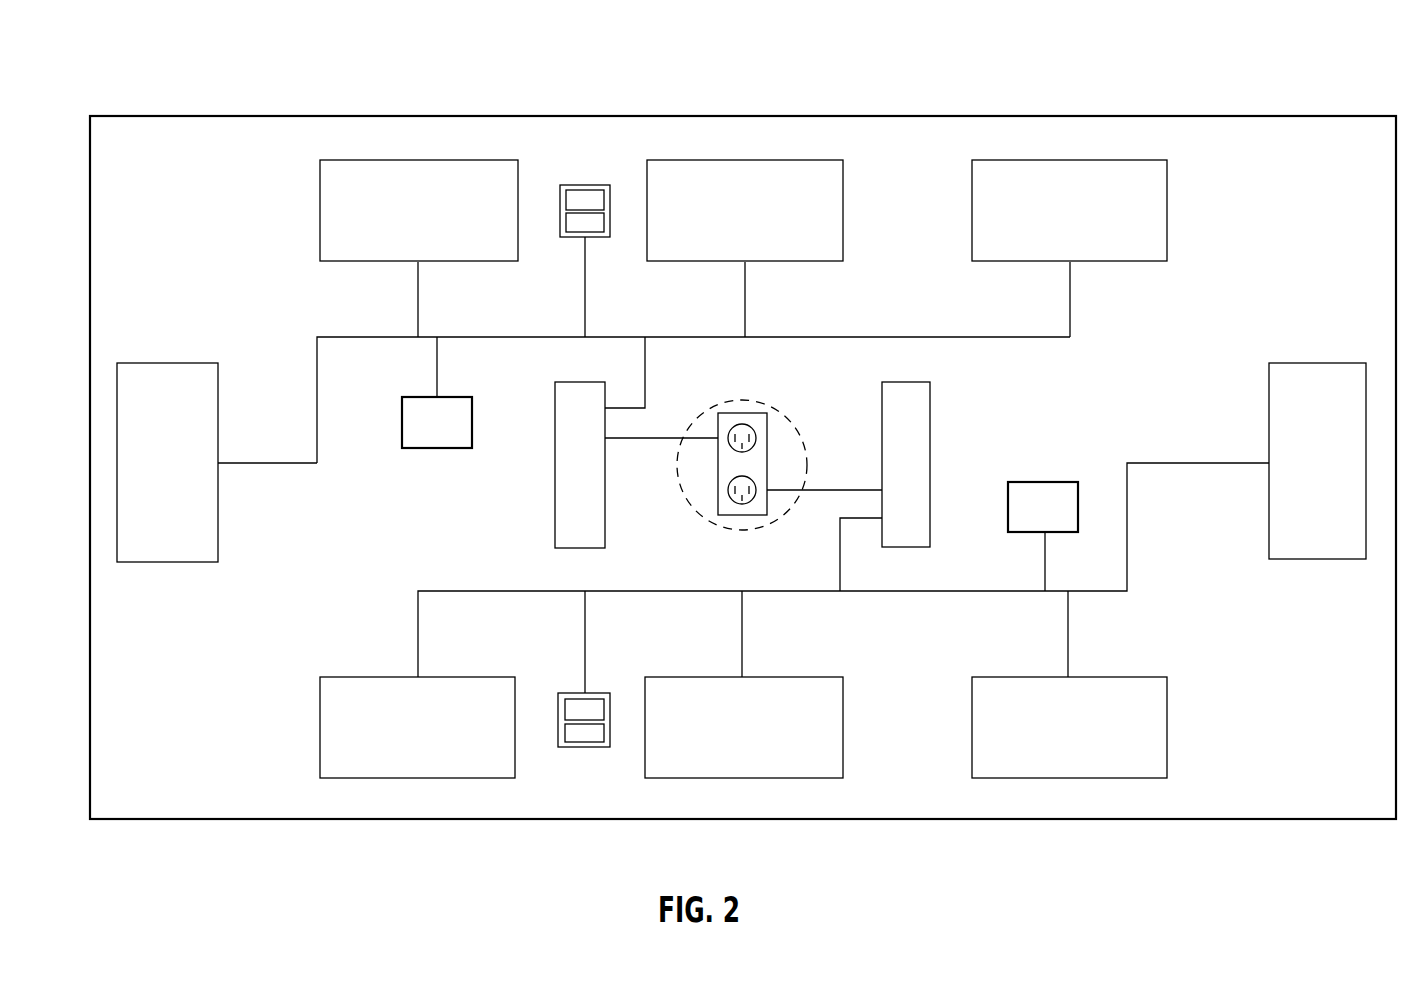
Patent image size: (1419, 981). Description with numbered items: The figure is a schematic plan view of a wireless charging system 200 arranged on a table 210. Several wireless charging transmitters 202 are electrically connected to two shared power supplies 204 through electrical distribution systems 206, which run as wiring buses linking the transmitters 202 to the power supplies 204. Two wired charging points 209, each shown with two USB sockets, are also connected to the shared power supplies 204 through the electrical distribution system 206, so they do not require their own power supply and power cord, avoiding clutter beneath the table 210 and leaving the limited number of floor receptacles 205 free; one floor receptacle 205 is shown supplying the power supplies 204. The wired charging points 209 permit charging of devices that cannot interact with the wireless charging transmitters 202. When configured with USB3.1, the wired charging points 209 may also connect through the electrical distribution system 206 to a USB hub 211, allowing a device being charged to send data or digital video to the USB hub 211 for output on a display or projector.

The wireless charging system 200 is at (1303, 57).
The wireless charging transmitter 202 is at (388, 160).
The shared power supply 204 is at (578, 382).
The floor receptacle 205 is at (742, 413).
The electrical distribution system 206 is at (918, 337).
The wired charging point 209 is at (590, 185).
The table 210 is at (1314, 116).
The USB hub 211 is at (412, 397).